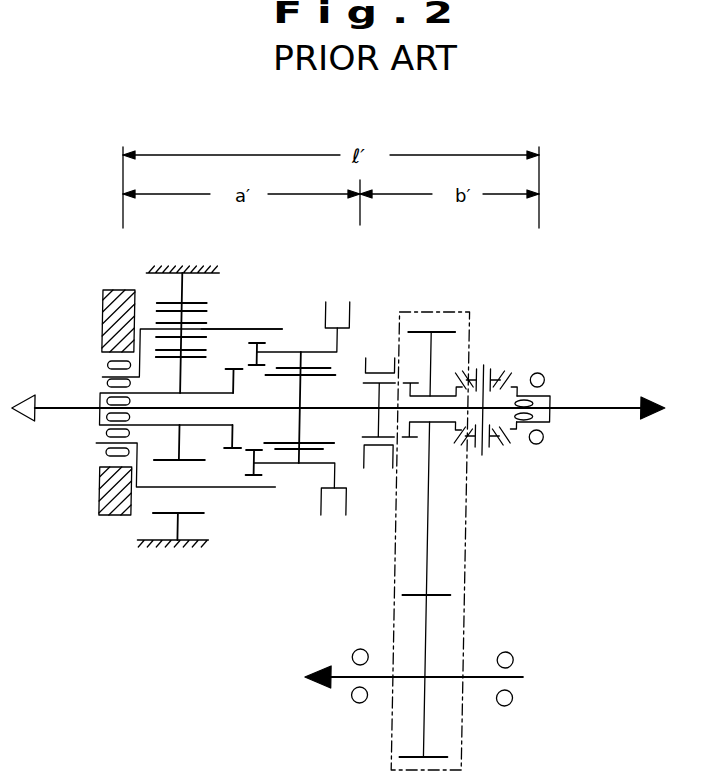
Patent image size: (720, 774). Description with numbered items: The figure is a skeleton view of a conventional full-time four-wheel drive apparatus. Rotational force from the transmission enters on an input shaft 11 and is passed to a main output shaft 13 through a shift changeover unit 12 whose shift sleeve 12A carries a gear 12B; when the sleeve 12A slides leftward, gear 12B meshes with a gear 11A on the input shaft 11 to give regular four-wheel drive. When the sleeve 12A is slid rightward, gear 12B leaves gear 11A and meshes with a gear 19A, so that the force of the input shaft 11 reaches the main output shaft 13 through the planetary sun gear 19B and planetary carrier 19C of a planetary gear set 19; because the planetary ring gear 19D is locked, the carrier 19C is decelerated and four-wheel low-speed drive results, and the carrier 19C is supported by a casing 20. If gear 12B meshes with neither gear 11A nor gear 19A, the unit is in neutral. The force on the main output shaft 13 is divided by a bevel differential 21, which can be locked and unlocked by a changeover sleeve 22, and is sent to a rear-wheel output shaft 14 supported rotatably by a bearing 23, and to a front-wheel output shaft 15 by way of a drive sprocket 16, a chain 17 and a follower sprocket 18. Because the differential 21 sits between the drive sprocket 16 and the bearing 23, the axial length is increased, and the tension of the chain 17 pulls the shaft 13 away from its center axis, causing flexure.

The input shaft 11 is at (68, 406).
The gear 11A is at (235, 367).
The shift changeover unit 12 is at (298, 283).
The shift sleeve 12A is at (313, 350).
The gear 12B is at (255, 371).
The main output shaft 13 is at (347, 412).
The rear-wheel output shaft 14 is at (595, 413).
The front-wheel output shaft 15 is at (381, 672).
The drive sprocket 16 is at (450, 331).
The chain 17 is at (466, 365).
The follower sprocket 18 is at (448, 761).
The planetary gear set 19 is at (152, 297).
The gear 19A is at (290, 326).
The planetary sun gear 19B is at (181, 379).
The planetary carrier 19C is at (221, 326).
The planetary ring gear 19D is at (182, 292).
The casing 20 is at (101, 324).
The differential 21 is at (523, 370).
The changeover sleeve 22 is at (366, 362).
The bearing 23 is at (551, 387).